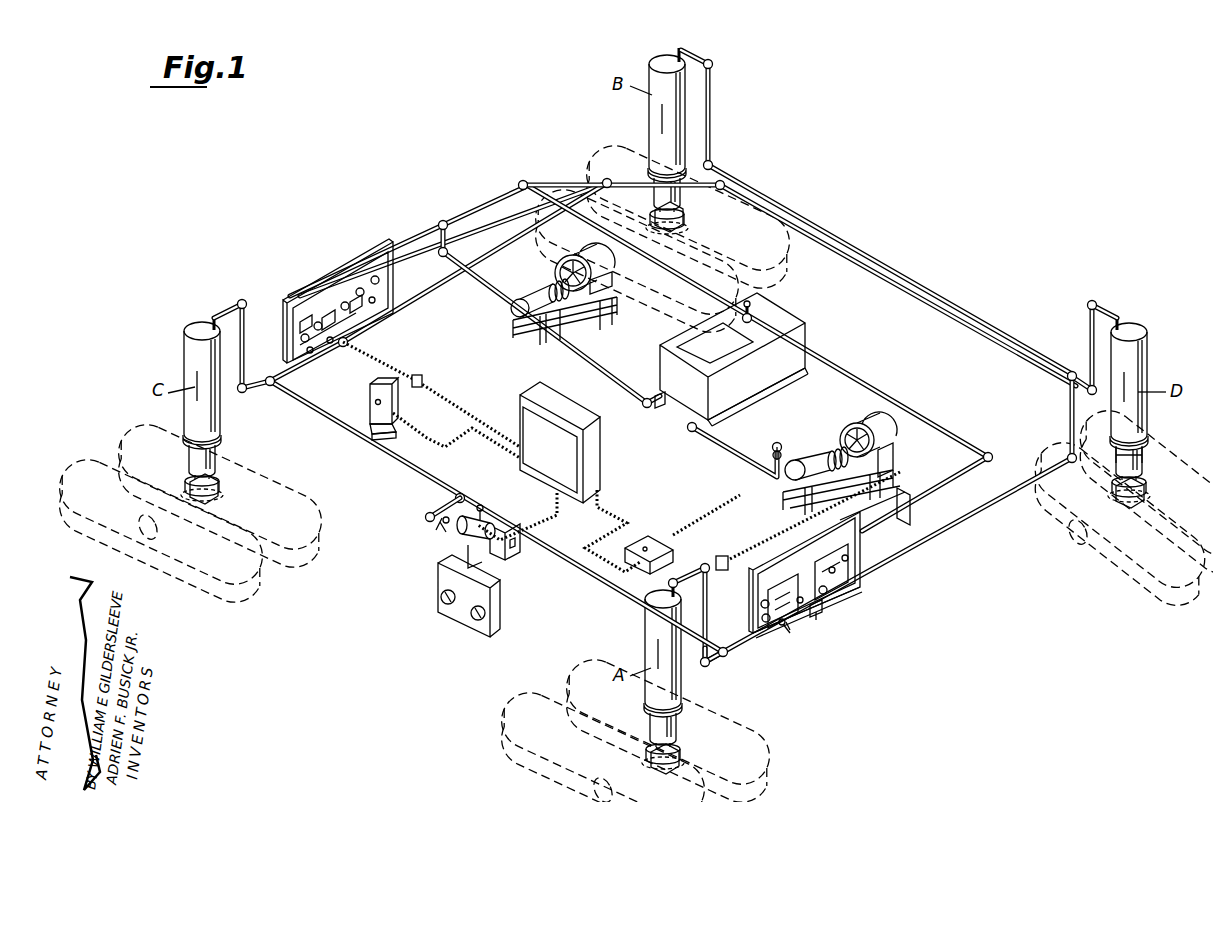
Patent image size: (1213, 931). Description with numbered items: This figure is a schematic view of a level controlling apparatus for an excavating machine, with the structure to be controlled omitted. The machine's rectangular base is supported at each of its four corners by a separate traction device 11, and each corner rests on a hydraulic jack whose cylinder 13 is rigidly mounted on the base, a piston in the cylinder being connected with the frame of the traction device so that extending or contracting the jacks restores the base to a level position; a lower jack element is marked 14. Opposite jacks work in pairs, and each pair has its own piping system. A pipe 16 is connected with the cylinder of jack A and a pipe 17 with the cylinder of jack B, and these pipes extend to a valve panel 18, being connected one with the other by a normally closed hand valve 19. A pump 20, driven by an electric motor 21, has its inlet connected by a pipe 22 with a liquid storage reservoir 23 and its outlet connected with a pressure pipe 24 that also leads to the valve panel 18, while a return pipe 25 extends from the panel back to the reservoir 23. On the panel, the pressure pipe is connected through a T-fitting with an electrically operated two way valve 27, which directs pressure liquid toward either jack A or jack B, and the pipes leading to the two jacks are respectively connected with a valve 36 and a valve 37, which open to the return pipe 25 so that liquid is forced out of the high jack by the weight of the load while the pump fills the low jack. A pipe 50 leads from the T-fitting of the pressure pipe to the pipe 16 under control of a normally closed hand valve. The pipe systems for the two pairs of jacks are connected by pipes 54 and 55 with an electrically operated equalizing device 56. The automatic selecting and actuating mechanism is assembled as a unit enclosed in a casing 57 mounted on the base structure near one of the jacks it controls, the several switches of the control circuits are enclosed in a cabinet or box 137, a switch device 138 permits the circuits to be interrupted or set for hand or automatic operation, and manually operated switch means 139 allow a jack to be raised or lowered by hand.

The traction device 11 is at (1108, 570).
The cylinder 13 is at (650, 112).
The piston rod 14 is at (1138, 449).
The pipe 16 is at (698, 655).
The pipe 17 is at (847, 232).
The valve panel 18 is at (760, 566).
The hand valve 19 is at (822, 610).
The pump 20 is at (806, 462).
The electric motor 21 is at (855, 417).
The pipe 22 is at (723, 450).
The liquid storage reservoir 23 is at (692, 395).
The pressure pipe 24 is at (915, 462).
The return pipe 25 is at (937, 487).
The two way valve 27 is at (806, 556).
The valve 36 is at (788, 628).
The valve 37 is at (860, 590).
The pipe 50 is at (752, 598).
The pipe 54 is at (606, 590).
The pipe 55 is at (370, 438).
The equalizing device 56 is at (468, 520).
The casing 57 is at (370, 392).
The cabinet or box 137 is at (590, 470).
The switch device 138 is at (446, 600).
The manually operated switch means 139 is at (476, 622).